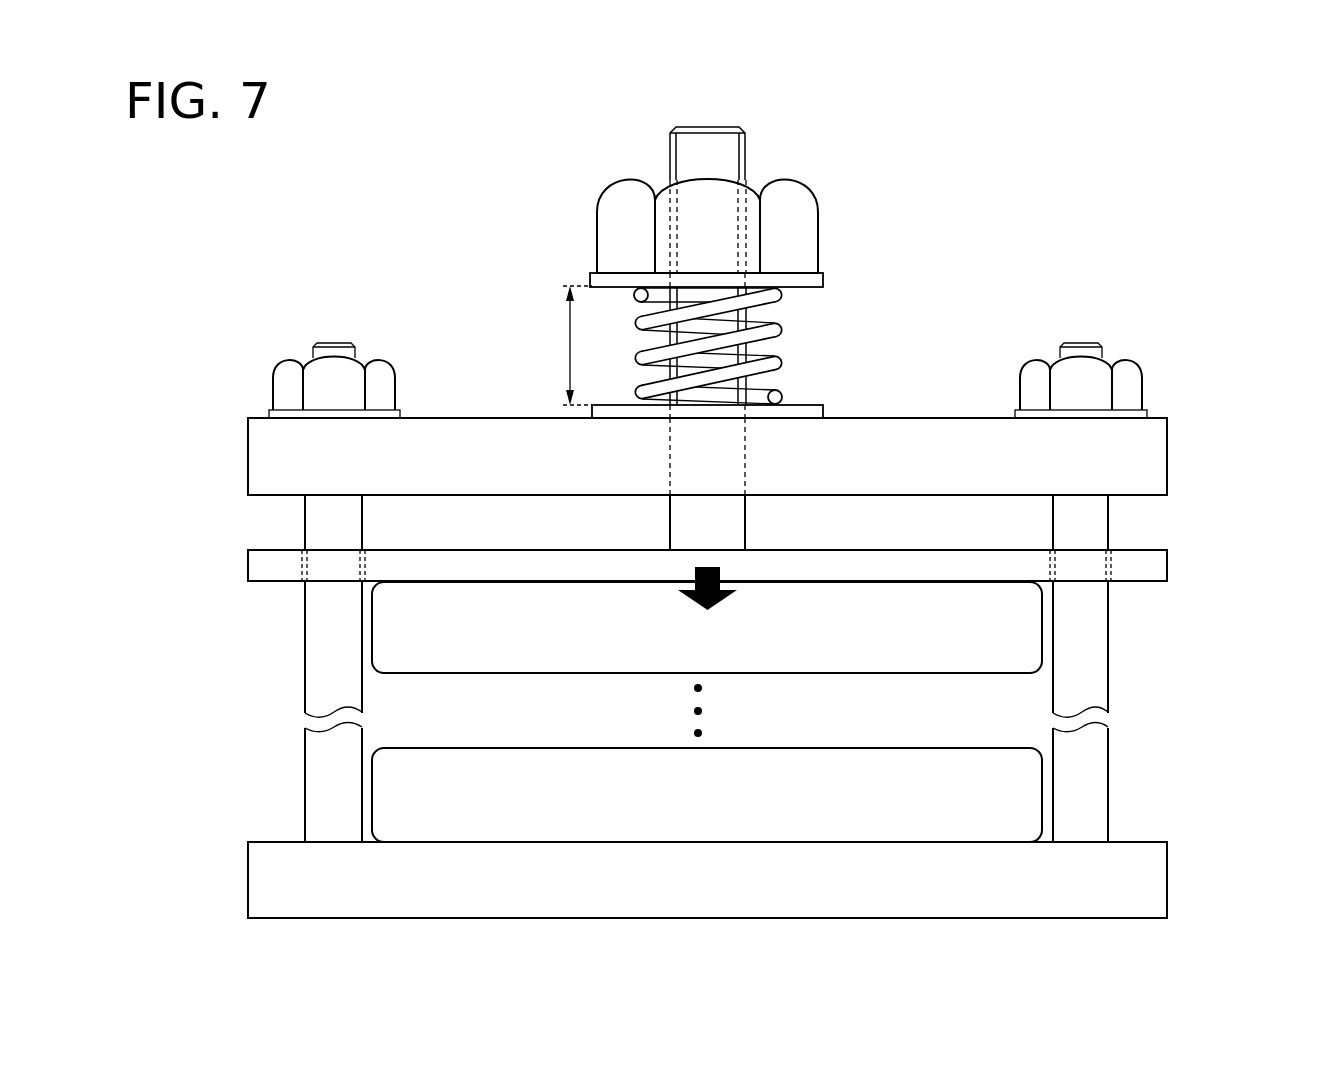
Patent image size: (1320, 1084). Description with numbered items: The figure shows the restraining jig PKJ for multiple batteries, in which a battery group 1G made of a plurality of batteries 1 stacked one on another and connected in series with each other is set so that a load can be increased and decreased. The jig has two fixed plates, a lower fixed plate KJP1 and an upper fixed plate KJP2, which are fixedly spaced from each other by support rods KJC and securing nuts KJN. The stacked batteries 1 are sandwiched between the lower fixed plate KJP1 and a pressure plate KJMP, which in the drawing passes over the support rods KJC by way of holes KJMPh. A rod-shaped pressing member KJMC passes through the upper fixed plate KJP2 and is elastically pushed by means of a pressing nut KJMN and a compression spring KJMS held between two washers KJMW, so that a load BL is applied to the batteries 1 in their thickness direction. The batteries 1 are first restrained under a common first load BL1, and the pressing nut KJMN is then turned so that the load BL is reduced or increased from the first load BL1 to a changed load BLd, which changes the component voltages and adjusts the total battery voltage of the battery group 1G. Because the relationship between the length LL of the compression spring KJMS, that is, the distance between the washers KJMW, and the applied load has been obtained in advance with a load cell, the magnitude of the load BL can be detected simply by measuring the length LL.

The restraining jig for multiple batteries PKJ is at (403, 265).
The rod-shaped pressing member KJMC is at (686, 152).
The pressing nut KJMN is at (805, 200).
The washers KJMW is at (825, 275).
The compression spring KJMS is at (785, 324).
The length of the compression spring LL is at (564, 345).
The securing nuts KJN is at (1128, 368).
The upper fixed plate KJP2 is at (1153, 470).
The pressure plate KJMP is at (835, 552).
The pressing plate hole KJMPh is at (1103, 562).
The support rods KJC is at (320, 628).
The battery 1 is at (484, 641).
The load BL is at (708, 605).
The first load BL1 is at (708, 605).
The changed load BLd is at (708, 605).
The battery group 1G is at (707, 712).
The lower fixed plate KJP1 is at (1140, 882).